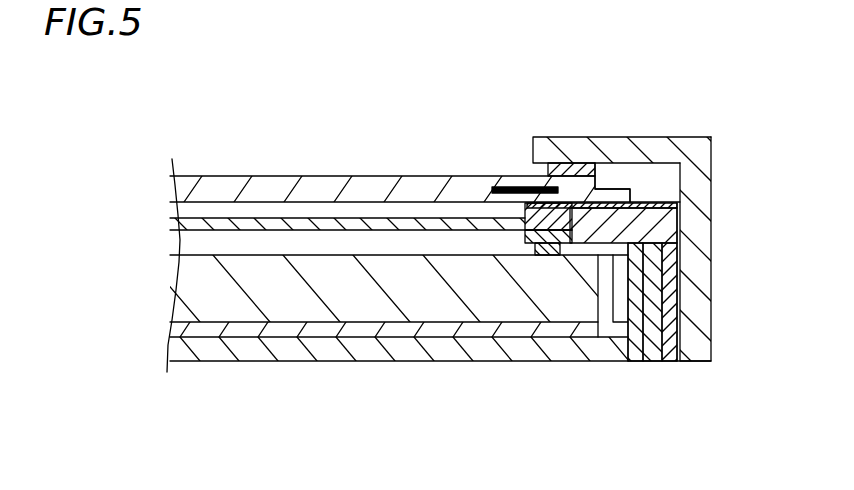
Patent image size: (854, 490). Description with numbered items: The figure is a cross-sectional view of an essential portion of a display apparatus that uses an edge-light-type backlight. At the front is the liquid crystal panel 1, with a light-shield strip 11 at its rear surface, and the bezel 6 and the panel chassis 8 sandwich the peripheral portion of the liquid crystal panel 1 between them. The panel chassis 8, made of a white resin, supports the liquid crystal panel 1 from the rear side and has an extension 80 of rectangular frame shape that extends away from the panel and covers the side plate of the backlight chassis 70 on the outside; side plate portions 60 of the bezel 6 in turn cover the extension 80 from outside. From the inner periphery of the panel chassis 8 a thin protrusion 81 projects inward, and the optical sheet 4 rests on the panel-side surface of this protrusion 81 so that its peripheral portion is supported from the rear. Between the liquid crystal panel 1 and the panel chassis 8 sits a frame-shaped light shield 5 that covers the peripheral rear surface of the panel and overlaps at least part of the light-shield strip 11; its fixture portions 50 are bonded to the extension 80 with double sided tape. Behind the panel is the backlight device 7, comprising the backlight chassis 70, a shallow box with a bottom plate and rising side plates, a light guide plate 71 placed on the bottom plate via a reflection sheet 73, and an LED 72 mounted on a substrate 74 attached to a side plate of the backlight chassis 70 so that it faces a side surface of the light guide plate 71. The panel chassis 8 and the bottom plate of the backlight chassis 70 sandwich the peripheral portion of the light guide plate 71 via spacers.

The liquid crystal panel 1 is at (278, 190).
The optical sheet 4 is at (214, 224).
The light shield 5 is at (665, 197).
The bezel 6 is at (604, 137).
The side plate portion of the bezel 60 is at (700, 168).
The panel chassis 8 is at (662, 220).
The extension 80 is at (668, 306).
The protrusion 81 is at (537, 228).
The light-shield strip 11 is at (503, 187).
The fixture portion of the light shield 50 is at (675, 226).
The backlight device 7 is at (400, 371).
The backlight chassis 70 is at (483, 354).
The light guide plate 71 is at (216, 312).
The LED 72 is at (621, 320).
The reflection sheet 73 is at (323, 329).
The substrate 74 is at (634, 328).